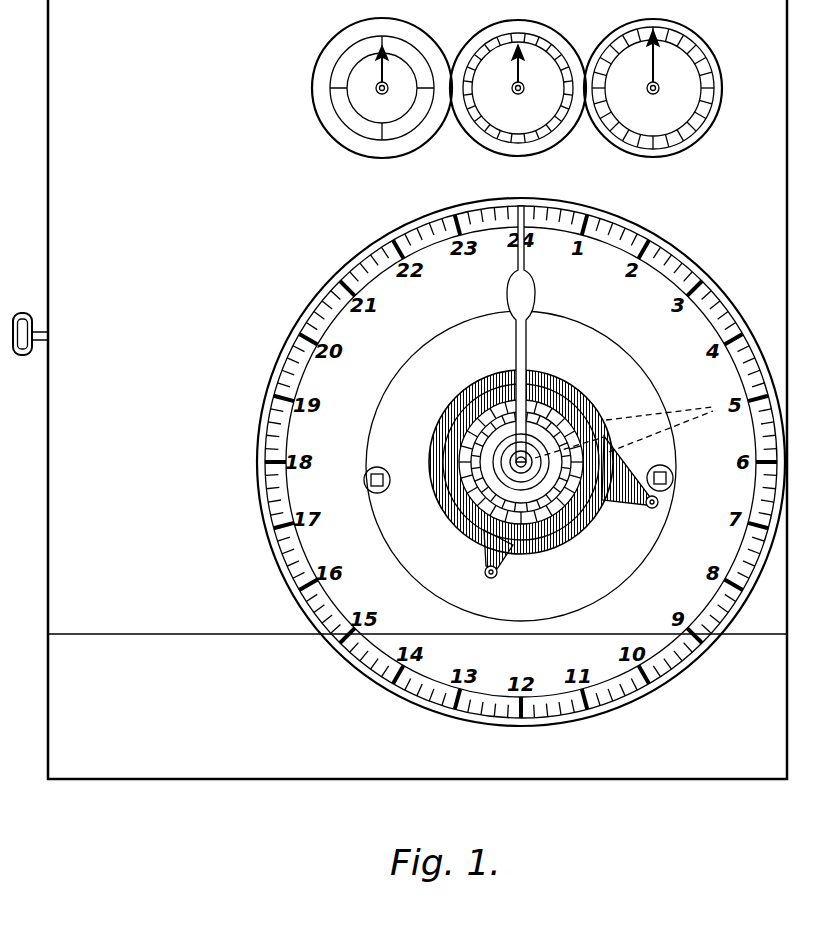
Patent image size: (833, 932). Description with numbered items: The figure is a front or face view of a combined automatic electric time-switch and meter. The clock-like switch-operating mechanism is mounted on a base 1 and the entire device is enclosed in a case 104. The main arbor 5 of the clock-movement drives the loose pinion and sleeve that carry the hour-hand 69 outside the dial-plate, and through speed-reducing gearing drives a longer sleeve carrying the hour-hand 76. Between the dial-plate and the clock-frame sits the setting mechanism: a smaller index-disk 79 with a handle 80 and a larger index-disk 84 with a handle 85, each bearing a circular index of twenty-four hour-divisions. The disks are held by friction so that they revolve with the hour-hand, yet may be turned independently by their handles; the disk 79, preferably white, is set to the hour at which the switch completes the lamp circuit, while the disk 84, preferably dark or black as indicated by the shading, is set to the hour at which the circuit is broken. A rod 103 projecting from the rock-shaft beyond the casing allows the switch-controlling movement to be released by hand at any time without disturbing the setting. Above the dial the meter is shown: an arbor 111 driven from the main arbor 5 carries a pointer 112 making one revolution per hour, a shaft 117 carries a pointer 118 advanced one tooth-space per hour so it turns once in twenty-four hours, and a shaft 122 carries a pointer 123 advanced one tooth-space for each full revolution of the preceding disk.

The base 1 is at (222, 712).
The main arbor 5 is at (516, 456).
The hour-hand 69 is at (524, 292).
The hour-hand 76 is at (634, 424).
The disk 79 is at (487, 447).
The handle 80 is at (488, 570).
The disk 84 is at (456, 513).
The handle 85 is at (650, 505).
The rod 103 is at (30, 323).
The case 104 is at (417, 434).
The arbor 111 is at (379, 79).
The pointer 112 is at (375, 70).
The shaft 117 is at (515, 81).
The pointer 118 is at (526, 77).
The shaft 122 is at (651, 74).
The pointer 123 is at (652, 72).